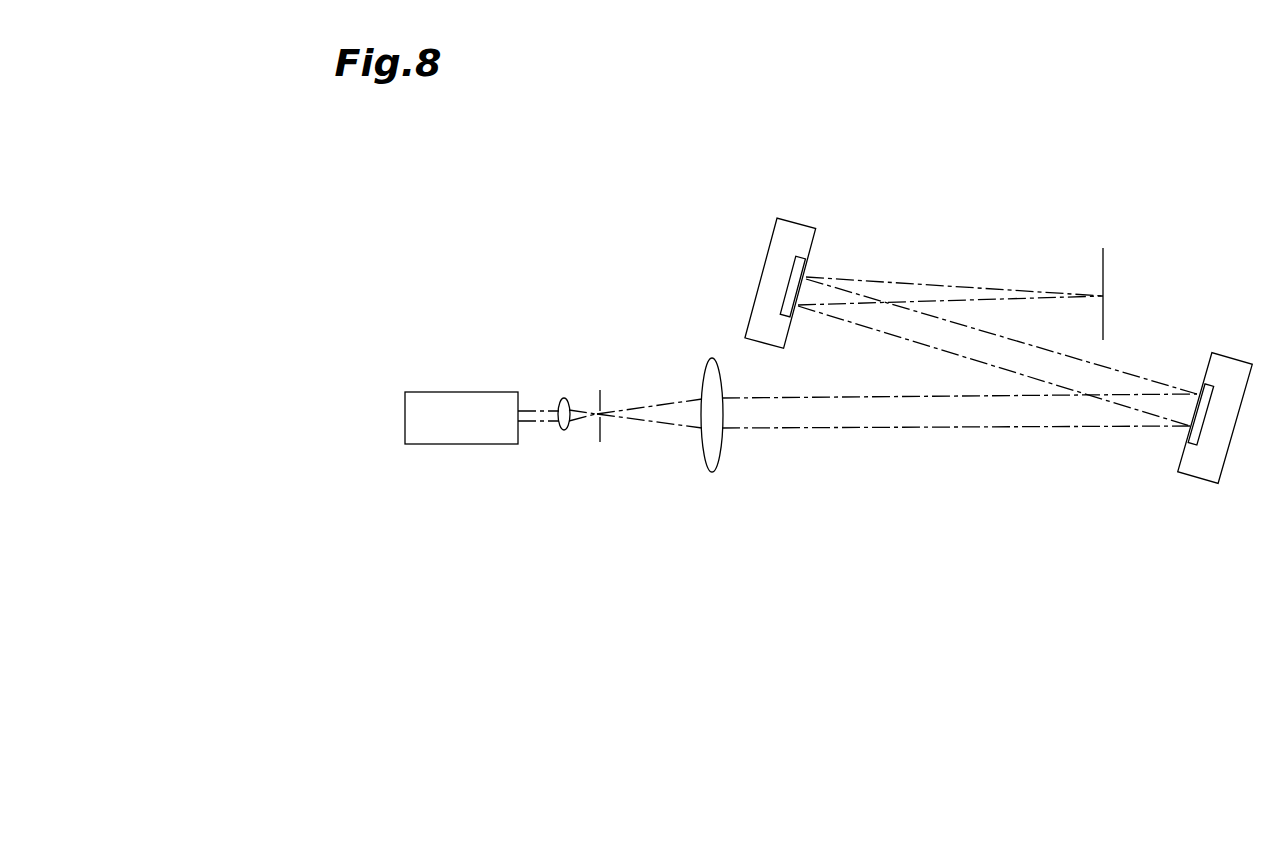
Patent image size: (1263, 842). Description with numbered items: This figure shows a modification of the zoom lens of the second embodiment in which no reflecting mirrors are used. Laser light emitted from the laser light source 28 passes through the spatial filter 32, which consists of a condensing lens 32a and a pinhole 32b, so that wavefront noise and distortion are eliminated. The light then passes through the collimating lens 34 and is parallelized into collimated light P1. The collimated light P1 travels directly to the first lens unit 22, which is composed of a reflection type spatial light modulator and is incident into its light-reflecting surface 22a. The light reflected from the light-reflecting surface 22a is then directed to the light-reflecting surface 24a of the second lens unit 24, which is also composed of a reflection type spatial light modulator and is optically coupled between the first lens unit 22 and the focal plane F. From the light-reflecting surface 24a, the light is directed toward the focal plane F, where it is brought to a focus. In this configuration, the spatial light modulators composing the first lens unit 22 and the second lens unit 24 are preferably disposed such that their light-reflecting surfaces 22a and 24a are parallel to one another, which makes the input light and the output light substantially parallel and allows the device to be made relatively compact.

The first lens unit 22 is at (1195, 444).
The light-reflecting surface 22a is at (1196, 407).
The second lens unit 24 is at (820, 262).
The light-reflecting surface 24a is at (803, 286).
The laser light source 28 is at (460, 445).
The spatial filter 32 is at (594, 455).
The condensing lens 32a is at (564, 431).
The pinhole 32b is at (617, 438).
The collimating lens 34 is at (720, 456).
The collimated light P1 is at (940, 431).
The focal plane F is at (1103, 266).